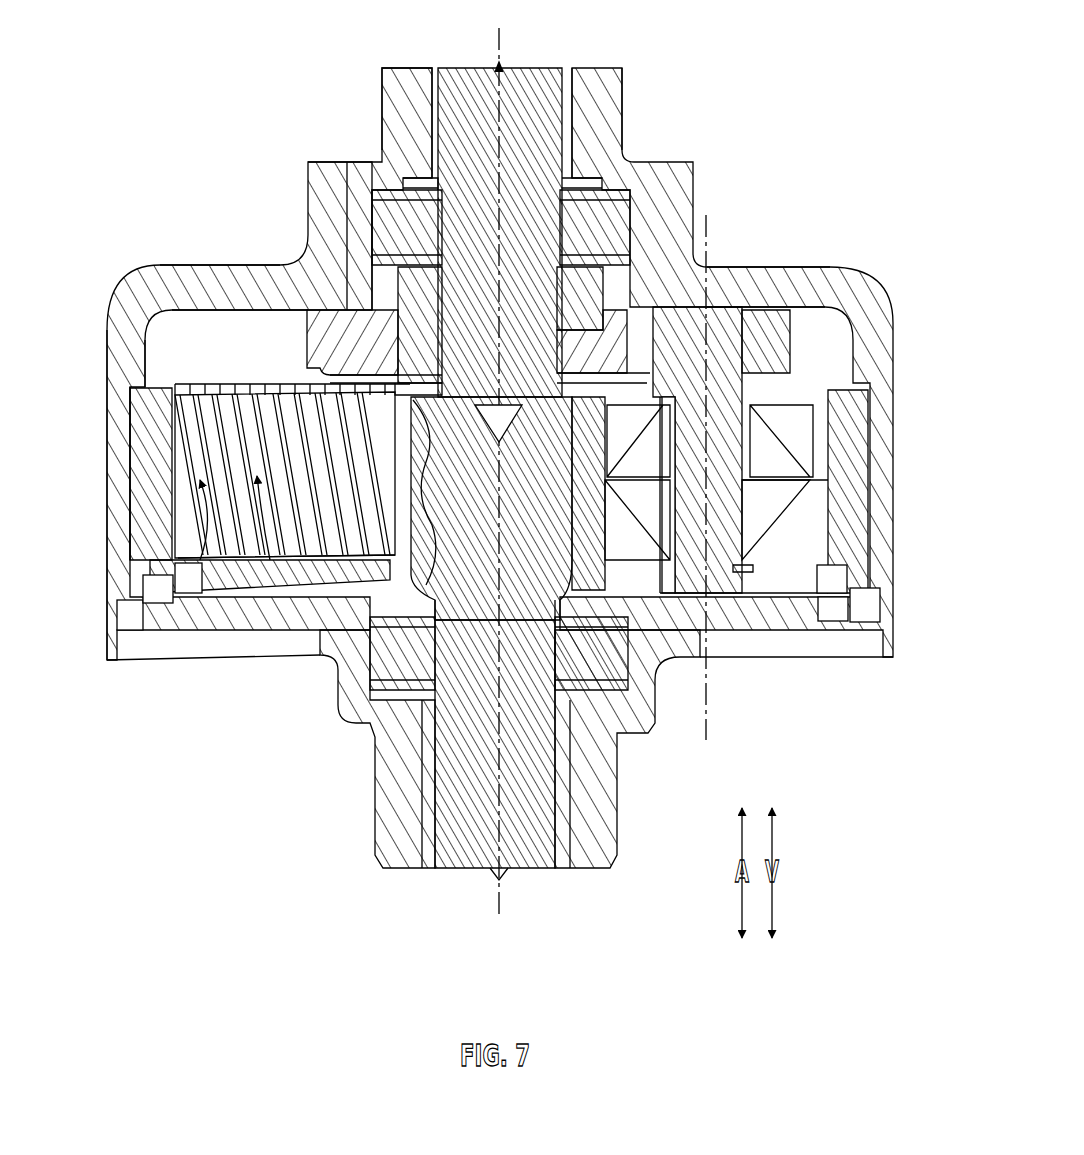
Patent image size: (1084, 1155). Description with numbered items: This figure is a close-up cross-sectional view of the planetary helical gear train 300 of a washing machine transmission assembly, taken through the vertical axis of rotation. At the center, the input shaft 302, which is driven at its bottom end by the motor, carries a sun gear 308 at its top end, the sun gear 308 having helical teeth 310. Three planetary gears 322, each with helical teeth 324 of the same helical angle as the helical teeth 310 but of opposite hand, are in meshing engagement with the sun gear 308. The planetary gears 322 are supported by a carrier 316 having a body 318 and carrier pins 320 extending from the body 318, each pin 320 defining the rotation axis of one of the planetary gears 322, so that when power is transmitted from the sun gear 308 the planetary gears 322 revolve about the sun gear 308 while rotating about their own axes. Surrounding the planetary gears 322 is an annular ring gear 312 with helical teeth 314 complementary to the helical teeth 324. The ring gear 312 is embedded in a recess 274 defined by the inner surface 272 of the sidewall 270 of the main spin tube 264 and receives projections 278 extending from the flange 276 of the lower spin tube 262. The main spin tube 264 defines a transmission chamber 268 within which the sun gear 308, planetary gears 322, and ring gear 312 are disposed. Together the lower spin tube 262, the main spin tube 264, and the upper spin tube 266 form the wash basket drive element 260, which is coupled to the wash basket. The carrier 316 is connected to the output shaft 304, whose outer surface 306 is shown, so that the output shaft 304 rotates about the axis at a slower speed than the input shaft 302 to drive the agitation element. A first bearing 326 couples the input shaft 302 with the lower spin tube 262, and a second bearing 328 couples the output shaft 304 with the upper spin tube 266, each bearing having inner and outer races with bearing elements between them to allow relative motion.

The wash basket drive element 260 is at (222, 262).
The lower spin tube 262 is at (402, 848).
The main spin tube 264 is at (153, 300).
The upper spin tube 266 is at (384, 76).
The transmission chamber 268 is at (832, 333).
The sidewall 270 is at (104, 539).
The inner surface 272 is at (151, 346).
The recess 274 is at (126, 385).
The flange 276 is at (748, 620).
The projections 278 is at (157, 586).
The planetary helical gear train 300 is at (814, 146).
The input shaft 302 is at (556, 830).
The output shaft 304 is at (562, 98).
The outer surface 306 is at (570, 136).
The sun gear 308 is at (456, 600).
The helical teeth 310 is at (418, 558).
The ring gear 312 is at (148, 448).
The helical teeth 314 is at (200, 480).
The carrier 316 is at (348, 328).
The body 318 is at (312, 330).
The carrier pins 320 is at (730, 328).
The planetary gears 322 is at (264, 392).
The helical teeth 324 is at (258, 478).
The first bearing 326 is at (590, 666).
The second bearing 328 is at (368, 202).